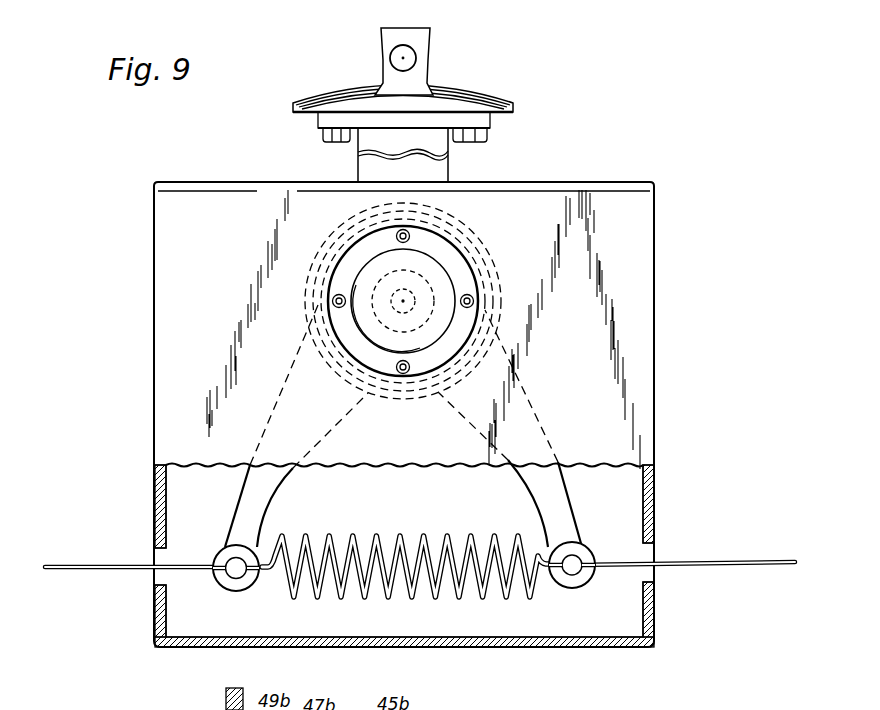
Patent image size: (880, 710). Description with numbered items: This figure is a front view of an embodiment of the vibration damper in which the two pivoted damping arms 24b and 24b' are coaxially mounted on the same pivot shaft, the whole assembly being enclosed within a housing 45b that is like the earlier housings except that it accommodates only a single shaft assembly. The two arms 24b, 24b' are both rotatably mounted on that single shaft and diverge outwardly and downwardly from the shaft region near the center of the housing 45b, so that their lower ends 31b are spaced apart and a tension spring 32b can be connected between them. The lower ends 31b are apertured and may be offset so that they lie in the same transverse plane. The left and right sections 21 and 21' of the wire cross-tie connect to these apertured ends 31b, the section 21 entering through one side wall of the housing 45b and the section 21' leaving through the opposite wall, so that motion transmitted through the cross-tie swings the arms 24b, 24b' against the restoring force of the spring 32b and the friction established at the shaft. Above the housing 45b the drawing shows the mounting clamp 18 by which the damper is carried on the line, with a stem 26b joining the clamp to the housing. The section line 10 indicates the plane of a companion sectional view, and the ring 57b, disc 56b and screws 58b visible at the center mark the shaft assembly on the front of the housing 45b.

The section line 10 is at (420, 11).
The mounting clamp 18 is at (462, 96).
The stem 26b is at (361, 164).
The housing 45b is at (166, 268).
The ring 57b is at (442, 242).
The disc 56b is at (447, 278).
The screws 58b is at (338, 294).
The left section of wire cross-tie 21 is at (140, 547).
The right section of wire cross-tie 21' is at (683, 546).
The tension spring 32b is at (396, 533).
The pivoted damping arm 24b is at (271, 426).
The pivoted damping arm 24b' is at (530, 428).
The apertured lower ends 31b is at (228, 581).